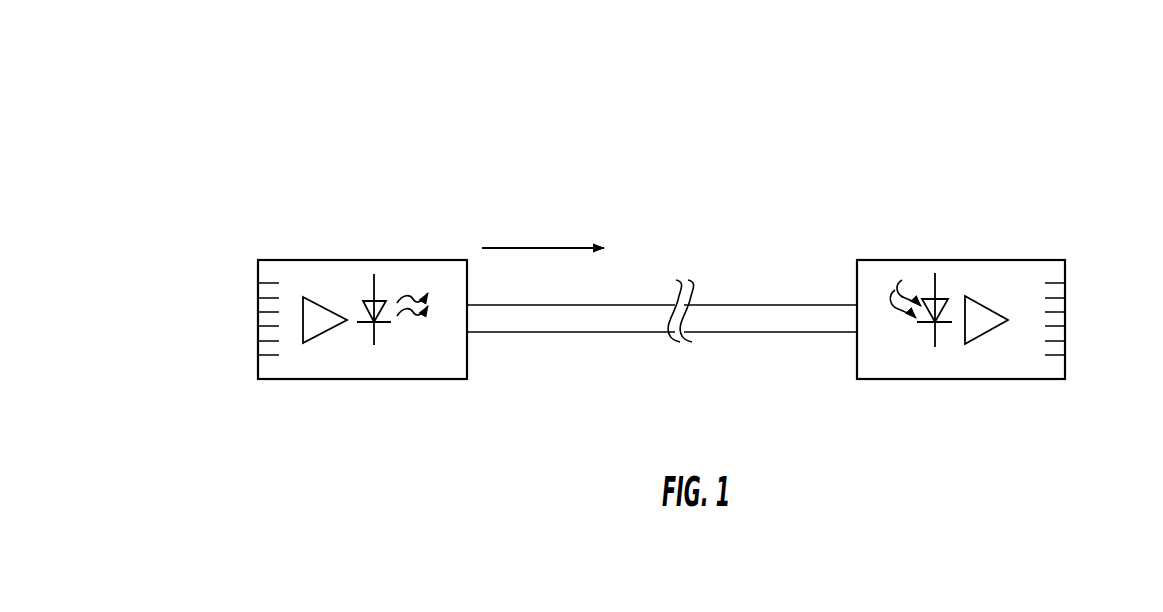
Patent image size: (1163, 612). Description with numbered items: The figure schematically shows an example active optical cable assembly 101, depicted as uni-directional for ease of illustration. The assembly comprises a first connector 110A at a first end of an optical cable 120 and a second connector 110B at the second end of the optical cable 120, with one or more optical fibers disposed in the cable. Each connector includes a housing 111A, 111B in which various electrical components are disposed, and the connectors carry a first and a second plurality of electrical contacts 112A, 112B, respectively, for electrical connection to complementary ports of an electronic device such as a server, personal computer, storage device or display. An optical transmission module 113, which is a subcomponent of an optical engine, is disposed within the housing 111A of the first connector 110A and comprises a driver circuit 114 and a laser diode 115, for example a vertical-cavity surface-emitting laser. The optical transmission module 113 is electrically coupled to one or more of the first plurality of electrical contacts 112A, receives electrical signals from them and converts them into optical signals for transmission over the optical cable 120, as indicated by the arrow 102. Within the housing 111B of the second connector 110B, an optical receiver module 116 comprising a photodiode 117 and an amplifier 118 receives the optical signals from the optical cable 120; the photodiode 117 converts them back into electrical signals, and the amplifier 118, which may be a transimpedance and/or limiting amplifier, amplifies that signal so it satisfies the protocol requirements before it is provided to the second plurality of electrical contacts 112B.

The active optical cable assembly 101 is at (406, 97).
The arrow 102 is at (540, 246).
The first connector 110A is at (305, 225).
The second connector 110B is at (952, 248).
The housing 111A is at (336, 260).
The housing 111B is at (988, 259).
The first plurality of electrical contacts 112A is at (255, 355).
The second plurality of electrical contacts 112B is at (1068, 348).
The optical transmission module 113 is at (357, 365).
The driver circuit 114 is at (318, 345).
The laser diode 115 is at (398, 348).
The optical receiver module 116 is at (916, 358).
The photodiode 117 is at (902, 332).
The amplifier 118 is at (990, 348).
The optical cable 120 is at (561, 333).